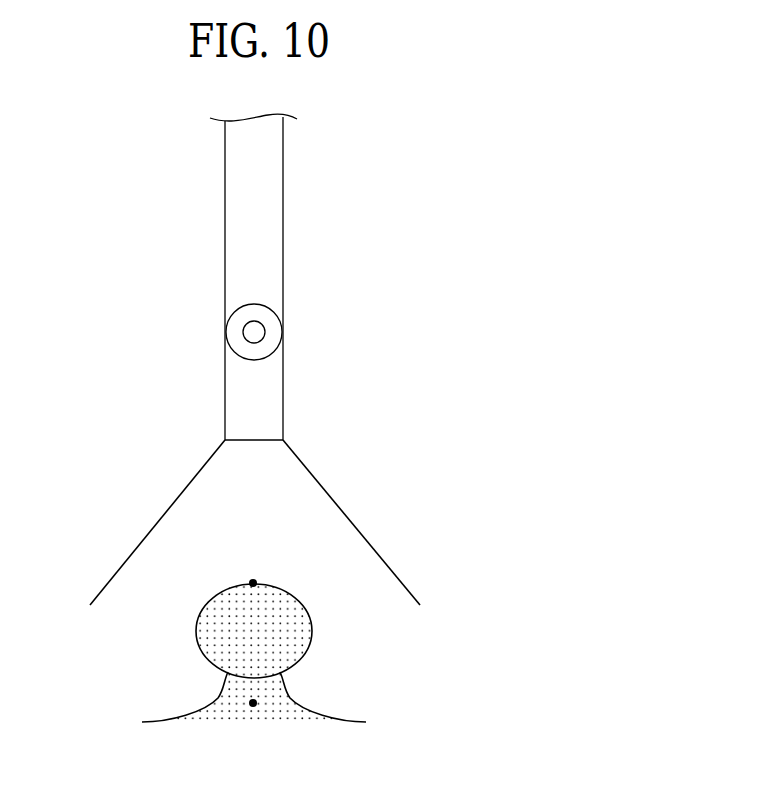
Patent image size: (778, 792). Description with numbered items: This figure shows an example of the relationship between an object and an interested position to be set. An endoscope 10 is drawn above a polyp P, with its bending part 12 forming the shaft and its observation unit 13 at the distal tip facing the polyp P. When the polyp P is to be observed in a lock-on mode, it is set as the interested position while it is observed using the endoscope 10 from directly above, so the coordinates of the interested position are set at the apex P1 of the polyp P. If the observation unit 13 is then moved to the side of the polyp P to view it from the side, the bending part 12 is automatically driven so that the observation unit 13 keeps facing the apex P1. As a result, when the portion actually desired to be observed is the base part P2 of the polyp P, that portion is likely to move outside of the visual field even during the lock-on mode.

The endoscope 10 is at (318, 232).
The bending part 12 is at (274, 328).
The observation unit 13 is at (250, 441).
The polyp P is at (340, 604).
The apex P1 is at (255, 578).
The base part P2 is at (258, 702).